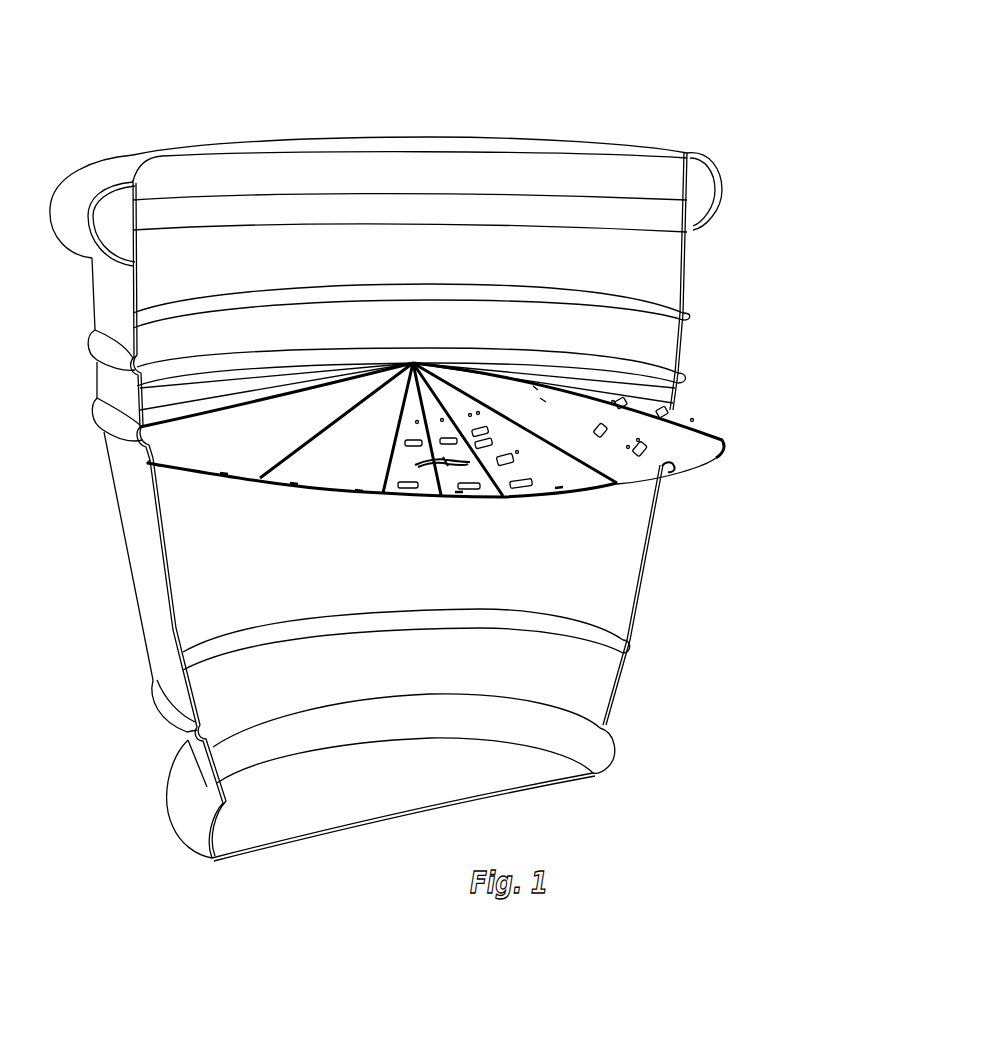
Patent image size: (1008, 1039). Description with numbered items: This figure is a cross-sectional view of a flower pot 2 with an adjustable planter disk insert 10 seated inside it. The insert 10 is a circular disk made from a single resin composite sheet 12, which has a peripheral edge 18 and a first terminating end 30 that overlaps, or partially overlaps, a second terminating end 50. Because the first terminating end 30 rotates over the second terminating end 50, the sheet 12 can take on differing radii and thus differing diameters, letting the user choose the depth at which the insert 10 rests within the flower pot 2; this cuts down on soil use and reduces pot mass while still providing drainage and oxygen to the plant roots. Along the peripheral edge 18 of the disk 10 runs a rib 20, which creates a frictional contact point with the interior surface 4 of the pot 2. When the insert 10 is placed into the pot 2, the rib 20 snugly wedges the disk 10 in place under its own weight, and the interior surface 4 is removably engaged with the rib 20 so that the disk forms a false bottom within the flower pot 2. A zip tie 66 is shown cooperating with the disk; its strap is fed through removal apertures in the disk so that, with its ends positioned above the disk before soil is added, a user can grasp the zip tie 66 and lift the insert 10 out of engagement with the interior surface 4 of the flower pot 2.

The flower pot 2 is at (258, 143).
The interior surface 4 is at (218, 267).
The adjustable planter disk insert 10 is at (758, 450).
The resin composite sheet 12 is at (672, 403).
The peripheral edge 18 is at (157, 463).
The rib 20 is at (180, 473).
The first terminating end 30 is at (615, 482).
The second terminating end 50 is at (617, 483).
The zip tie 66 is at (445, 465).